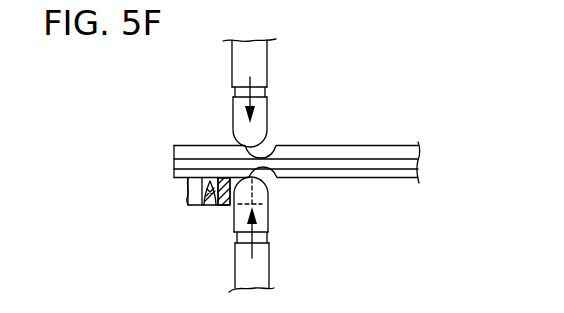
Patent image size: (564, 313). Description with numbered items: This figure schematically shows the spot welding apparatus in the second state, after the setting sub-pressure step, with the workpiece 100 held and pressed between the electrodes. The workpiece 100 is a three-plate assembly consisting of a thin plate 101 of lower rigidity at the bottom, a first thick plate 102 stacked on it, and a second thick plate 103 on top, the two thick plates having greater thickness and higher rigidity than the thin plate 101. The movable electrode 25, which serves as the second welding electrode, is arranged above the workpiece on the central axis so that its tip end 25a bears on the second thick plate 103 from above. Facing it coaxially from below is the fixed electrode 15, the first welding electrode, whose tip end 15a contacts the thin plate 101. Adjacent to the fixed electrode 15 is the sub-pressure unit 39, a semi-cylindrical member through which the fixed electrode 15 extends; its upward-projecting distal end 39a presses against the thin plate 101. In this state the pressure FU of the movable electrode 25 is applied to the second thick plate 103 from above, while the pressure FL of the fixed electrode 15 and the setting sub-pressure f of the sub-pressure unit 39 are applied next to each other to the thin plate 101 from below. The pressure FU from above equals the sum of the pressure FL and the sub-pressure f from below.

The workpiece 100 is at (221, 137).
The thin plate 101 is at (177, 175).
The first thick plate 102 is at (177, 165).
The second thick plate 103 is at (177, 154).
The movable electrode 25 is at (262, 93).
The tip end of the movable electrode 25a is at (273, 148).
The fixed electrode 15 is at (286, 233).
The tip end of the fixed electrode 15a is at (276, 174).
The sub-pressure unit 39 is at (201, 196).
The distal end of the sub-pressure unit 39a is at (224, 206).
The setting sub-pressure f is at (212, 198).
The pressure of the movable electrode FU is at (247, 91).
The pressure of the fixed electrode FL is at (254, 248).